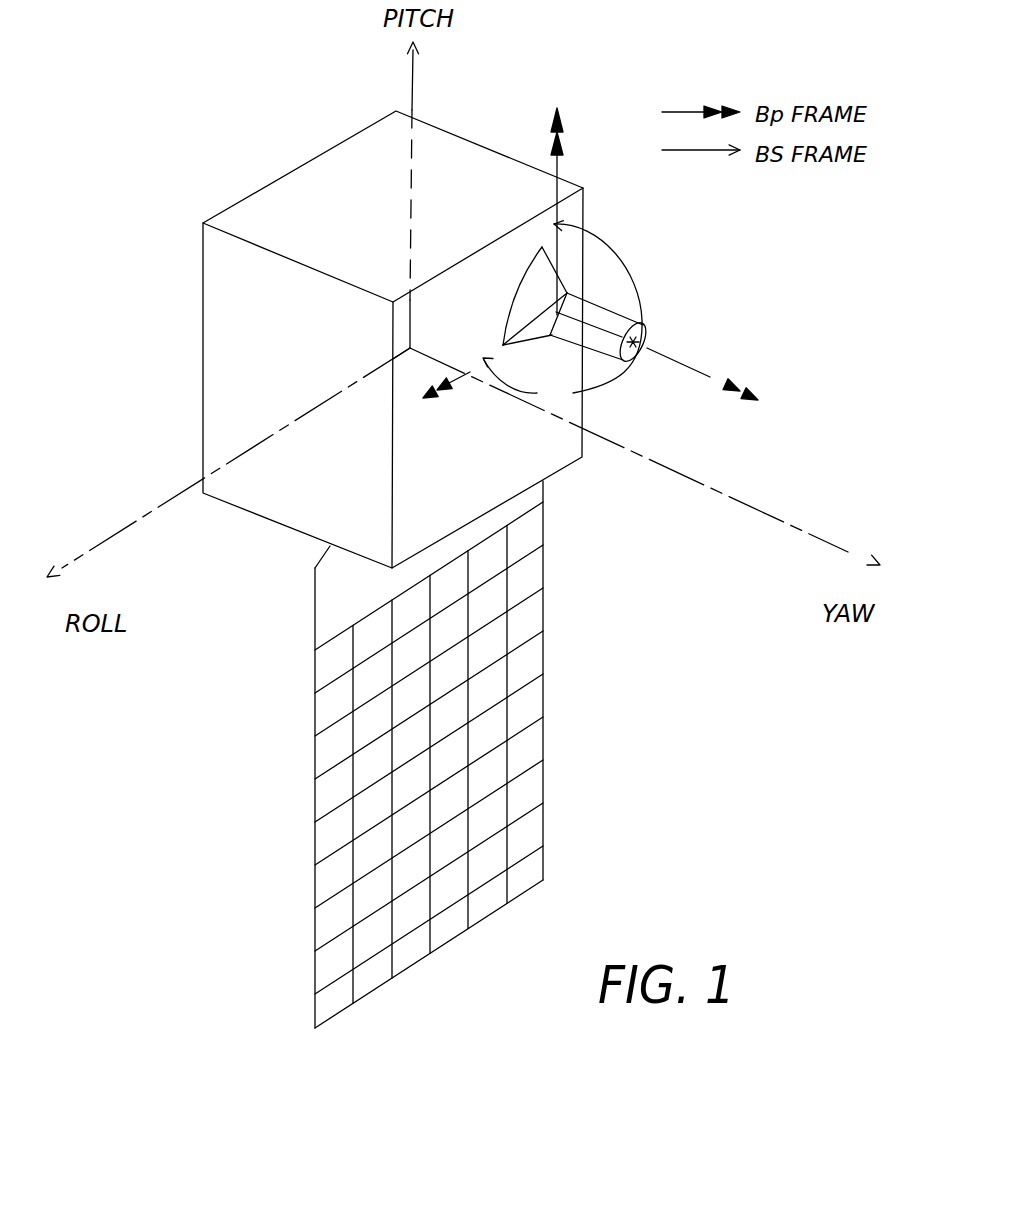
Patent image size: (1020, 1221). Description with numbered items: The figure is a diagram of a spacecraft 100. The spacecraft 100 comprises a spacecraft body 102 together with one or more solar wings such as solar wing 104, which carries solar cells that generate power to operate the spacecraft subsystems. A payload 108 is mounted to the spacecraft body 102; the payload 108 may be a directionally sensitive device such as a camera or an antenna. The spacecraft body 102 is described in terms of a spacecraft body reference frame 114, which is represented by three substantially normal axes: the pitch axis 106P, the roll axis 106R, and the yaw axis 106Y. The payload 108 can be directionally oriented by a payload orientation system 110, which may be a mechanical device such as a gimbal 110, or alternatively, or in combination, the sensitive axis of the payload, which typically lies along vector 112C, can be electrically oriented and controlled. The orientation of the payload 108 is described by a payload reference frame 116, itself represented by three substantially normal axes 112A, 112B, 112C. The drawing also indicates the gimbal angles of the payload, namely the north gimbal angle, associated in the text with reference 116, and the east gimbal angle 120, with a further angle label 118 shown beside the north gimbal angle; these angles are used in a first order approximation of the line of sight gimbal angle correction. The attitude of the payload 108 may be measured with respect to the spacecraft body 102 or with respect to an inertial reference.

The spacecraft 100 is at (120, 153).
The spacecraft body 102 is at (310, 157).
The solar wing 104 is at (315, 790).
The pitch axis 106P is at (413, 87).
The roll axis 106R is at (184, 490).
The yaw axis 106Y is at (628, 458).
The payload 108 is at (650, 328).
The payload orientation system 110 is at (517, 287).
The payload reference frame axis 112A is at (567, 128).
The payload reference frame axis 112B is at (455, 381).
The payload reference frame axis 112C is at (697, 373).
The spacecraft body reference frame Bs 114 is at (383, 345).
The payload reference frame 116 is at (540, 307).
The thruster elevation angle N0 118 is at (647, 255).
The east gimbal angle 120 is at (570, 410).